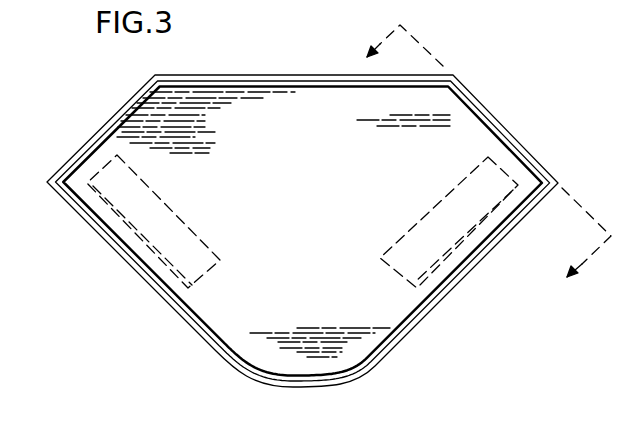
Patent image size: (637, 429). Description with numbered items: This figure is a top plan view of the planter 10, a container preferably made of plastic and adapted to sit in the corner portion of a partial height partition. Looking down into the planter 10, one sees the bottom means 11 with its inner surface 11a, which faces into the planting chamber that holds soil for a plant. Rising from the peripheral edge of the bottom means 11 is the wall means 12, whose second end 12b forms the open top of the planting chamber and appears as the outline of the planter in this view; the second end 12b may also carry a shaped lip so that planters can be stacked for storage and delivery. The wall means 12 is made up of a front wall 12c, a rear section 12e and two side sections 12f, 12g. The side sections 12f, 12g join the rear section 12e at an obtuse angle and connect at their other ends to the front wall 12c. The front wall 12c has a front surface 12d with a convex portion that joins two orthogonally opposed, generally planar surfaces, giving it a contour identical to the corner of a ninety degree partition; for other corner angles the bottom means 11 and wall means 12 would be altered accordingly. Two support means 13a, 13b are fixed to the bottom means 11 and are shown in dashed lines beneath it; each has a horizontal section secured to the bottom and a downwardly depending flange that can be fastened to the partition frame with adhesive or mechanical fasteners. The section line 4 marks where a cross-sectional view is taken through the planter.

The planter 10 is at (418, 334).
The bottom means 11 is at (207, 97).
The inner surface 11a is at (318, 206).
The wall means 12 is at (511, 233).
The second end 12b is at (375, 367).
The front wall 12c is at (180, 302).
The front surface 12d is at (313, 372).
The rear section 12e is at (299, 87).
The side section 12f is at (128, 108).
The side section 12g is at (466, 116).
The support means 13a is at (133, 231).
The support means 13b is at (432, 268).
The section line 4- 4 is at (480, 161).